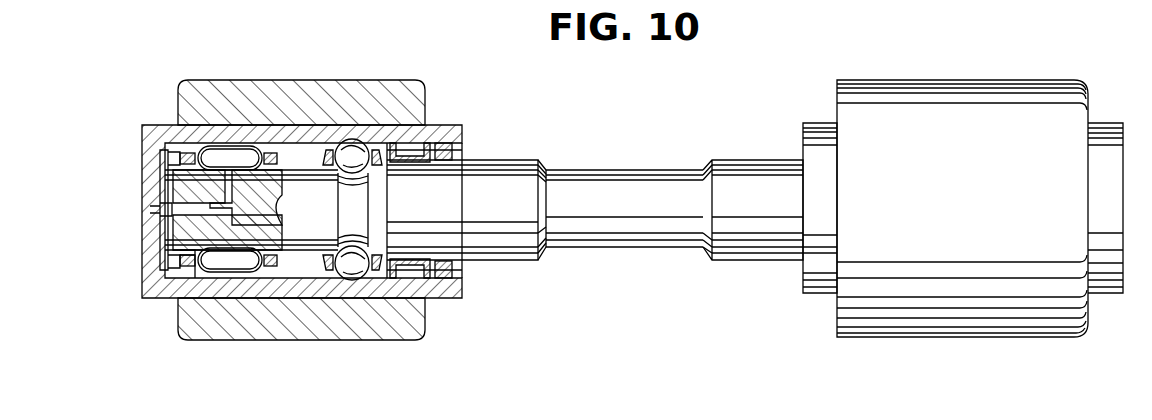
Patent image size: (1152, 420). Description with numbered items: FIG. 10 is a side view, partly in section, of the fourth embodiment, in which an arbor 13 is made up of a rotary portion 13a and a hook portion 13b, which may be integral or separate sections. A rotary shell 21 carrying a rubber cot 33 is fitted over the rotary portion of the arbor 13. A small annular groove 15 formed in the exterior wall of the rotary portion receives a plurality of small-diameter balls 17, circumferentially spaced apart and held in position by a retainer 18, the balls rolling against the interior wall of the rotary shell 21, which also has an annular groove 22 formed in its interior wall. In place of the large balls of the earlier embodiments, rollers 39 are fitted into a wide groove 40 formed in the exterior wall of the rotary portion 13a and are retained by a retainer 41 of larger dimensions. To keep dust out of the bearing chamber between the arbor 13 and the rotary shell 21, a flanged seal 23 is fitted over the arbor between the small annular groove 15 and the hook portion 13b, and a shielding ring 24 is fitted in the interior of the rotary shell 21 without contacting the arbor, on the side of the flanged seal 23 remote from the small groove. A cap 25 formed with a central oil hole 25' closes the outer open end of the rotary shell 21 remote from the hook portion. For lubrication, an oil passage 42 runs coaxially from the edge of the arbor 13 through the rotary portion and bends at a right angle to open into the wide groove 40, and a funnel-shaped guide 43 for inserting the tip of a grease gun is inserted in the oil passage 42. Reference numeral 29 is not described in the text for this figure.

The arbor 13 is at (474, 157).
The rotary portion 13a is at (298, 150).
The hook portion 13b is at (627, 185).
The small annular groove 15 is at (355, 208).
The small-diameter balls 17 is at (362, 148).
The retainer 18 is at (328, 265).
The rotary shell 21 is at (160, 135).
The annular groove 22 is at (352, 140).
The flanged seal 23 is at (405, 274).
The shielding ring 24 is at (462, 272).
The cap 25 is at (137, 210).
The oil hole 25' is at (127, 212).
The O-ring 29 is at (228, 150).
The rubber cot 33 is at (290, 320).
The rollers 39 is at (240, 258).
The wide groove 40 is at (262, 172).
The retainer 41 is at (195, 262).
The oil passage 42 is at (255, 205).
The funnel-shaped guide 43 is at (175, 228).